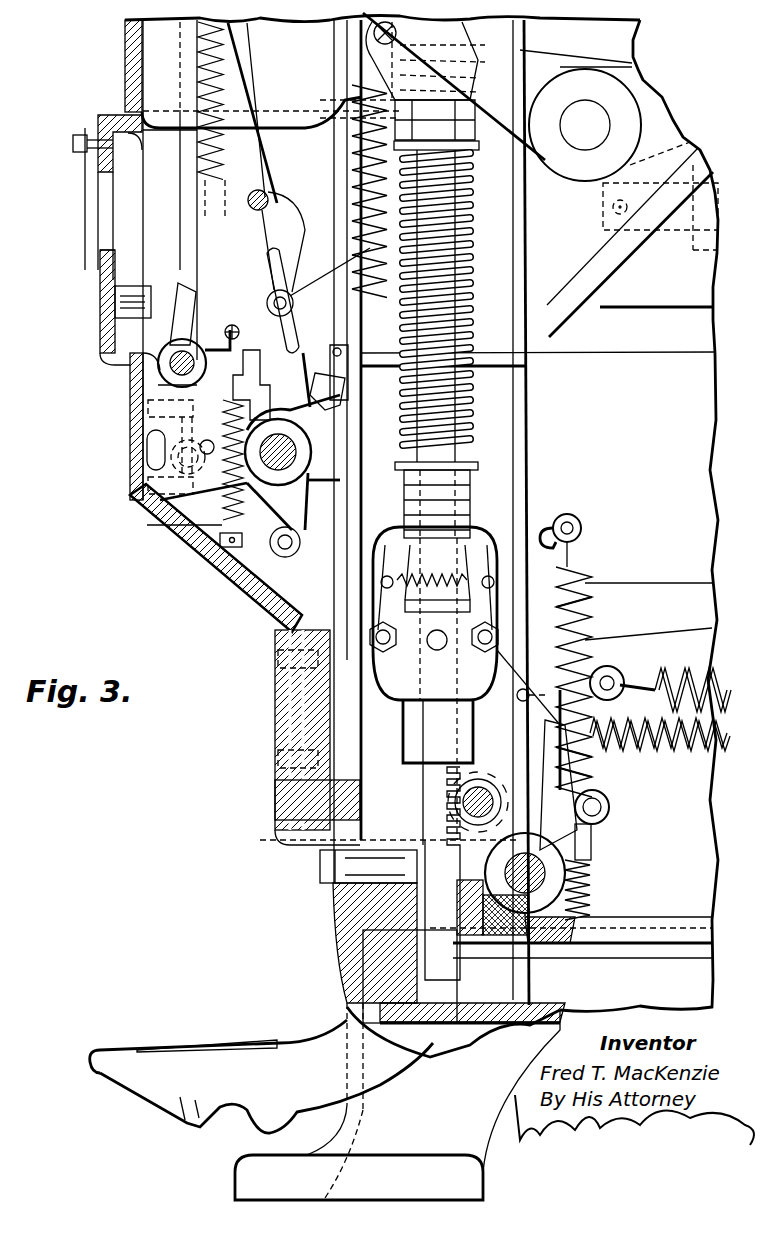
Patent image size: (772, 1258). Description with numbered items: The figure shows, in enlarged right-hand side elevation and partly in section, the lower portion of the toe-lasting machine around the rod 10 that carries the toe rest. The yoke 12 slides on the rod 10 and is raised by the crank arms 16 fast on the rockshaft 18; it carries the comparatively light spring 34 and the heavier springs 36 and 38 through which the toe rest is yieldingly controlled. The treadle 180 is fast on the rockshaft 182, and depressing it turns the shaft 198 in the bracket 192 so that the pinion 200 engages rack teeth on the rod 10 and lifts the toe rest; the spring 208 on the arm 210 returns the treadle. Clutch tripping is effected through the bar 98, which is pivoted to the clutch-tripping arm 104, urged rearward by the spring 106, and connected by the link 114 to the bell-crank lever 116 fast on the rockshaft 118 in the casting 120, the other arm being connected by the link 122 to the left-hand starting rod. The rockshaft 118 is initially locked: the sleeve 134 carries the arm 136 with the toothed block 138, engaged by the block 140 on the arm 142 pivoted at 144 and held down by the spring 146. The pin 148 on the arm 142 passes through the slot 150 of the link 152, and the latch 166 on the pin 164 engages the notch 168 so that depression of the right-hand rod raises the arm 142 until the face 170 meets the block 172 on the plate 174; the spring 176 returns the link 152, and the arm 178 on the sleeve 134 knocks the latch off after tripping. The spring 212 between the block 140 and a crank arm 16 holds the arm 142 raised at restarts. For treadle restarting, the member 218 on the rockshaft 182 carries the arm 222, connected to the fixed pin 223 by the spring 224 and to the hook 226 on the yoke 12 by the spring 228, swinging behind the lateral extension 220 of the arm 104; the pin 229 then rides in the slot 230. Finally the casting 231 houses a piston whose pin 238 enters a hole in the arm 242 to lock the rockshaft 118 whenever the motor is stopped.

The rod 10 is at (417, 771).
The yoke 12 is at (528, 398).
The crank arms 16 is at (546, 60).
The rockshaft 18 is at (583, 147).
The light spring 34 is at (472, 264).
The heavier spring 36 is at (470, 58).
The heavier spring 38 is at (466, 87).
The bar 98 is at (683, 590).
The clutch-tripping arm 104 is at (588, 653).
The spring 106 is at (683, 672).
The link 114 is at (372, 528).
The bell-crank lever 116 is at (270, 543).
The rockshaft 118 is at (312, 453).
The casting 120 is at (224, 568).
The link 122 is at (183, 182).
The sleeve 134 is at (340, 434).
The arm 136 is at (249, 372).
The block 138 is at (305, 408).
The block 140 is at (345, 383).
The arm 142 is at (240, 316).
The pivot 144 is at (170, 364).
The spring 146 is at (207, 526).
The pin 148 is at (347, 268).
The slot 150 is at (268, 272).
The link 152 is at (235, 60).
The pin 164 is at (261, 189).
The latch 166 is at (292, 205).
The notch 168 is at (292, 302).
The face 170 is at (176, 282).
The block 172 is at (126, 284).
The plate 174 is at (115, 333).
The spring 176 is at (203, 143).
The arm 178 is at (340, 341).
The treadle 180 is at (205, 1043).
The rockshaft 182 is at (547, 872).
The bracket 192 is at (303, 730).
The shaft 198 is at (447, 798).
The pinion 200 is at (447, 782).
The spring 208 is at (698, 752).
The arm 210 is at (557, 693).
The spring 212 is at (322, 100).
The member 218 is at (600, 781).
The lateral extension 220 is at (600, 763).
The arm 222 is at (608, 816).
The fixed pin 223 is at (553, 947).
The spring 224 is at (588, 906).
The hook 226 is at (577, 514).
The spring 228 is at (578, 570).
The pin 229 is at (587, 599).
The slot 230 is at (517, 556).
The casting 231 is at (167, 441).
The pin 238 is at (207, 441).
The arm 242 is at (170, 524).